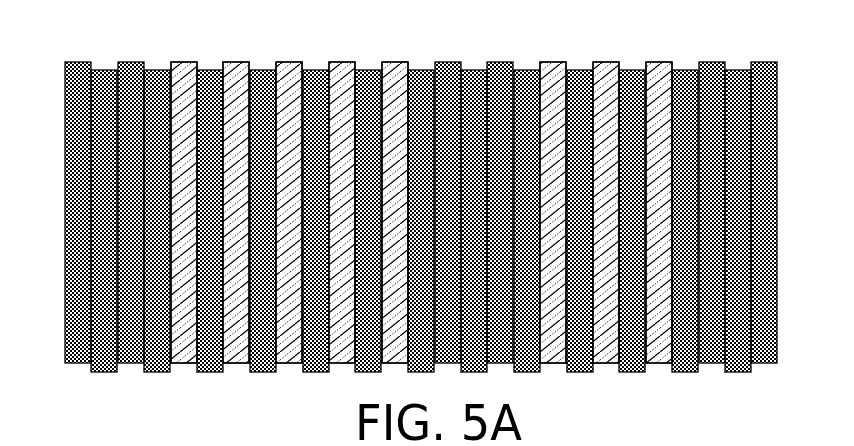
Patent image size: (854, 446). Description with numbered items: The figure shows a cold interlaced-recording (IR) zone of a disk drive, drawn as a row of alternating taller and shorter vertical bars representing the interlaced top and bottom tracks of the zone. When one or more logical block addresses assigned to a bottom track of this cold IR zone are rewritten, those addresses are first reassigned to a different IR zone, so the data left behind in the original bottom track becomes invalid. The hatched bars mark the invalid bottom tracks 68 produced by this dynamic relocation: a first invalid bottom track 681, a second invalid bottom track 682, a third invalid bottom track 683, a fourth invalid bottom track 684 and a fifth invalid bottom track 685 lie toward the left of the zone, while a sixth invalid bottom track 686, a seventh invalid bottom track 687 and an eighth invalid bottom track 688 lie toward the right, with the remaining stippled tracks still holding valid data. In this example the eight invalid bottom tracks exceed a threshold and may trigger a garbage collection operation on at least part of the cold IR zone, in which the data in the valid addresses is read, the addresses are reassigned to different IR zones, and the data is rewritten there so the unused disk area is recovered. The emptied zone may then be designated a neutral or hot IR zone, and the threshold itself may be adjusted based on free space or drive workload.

The invalid bottom tracks 68 is at (421, 194).
The first invalid bottom track 681 is at (184, 62).
The second invalid bottom track 682 is at (236, 62).
The third invalid bottom track 683 is at (289, 62).
The fourth invalid bottom track 684 is at (342, 62).
The fifth invalid bottom track 685 is at (395, 62).
The sixth invalid bottom track 686 is at (553, 62).
The seventh invalid bottom track 687 is at (606, 62).
The eighth invalid bottom track 688 is at (659, 62).